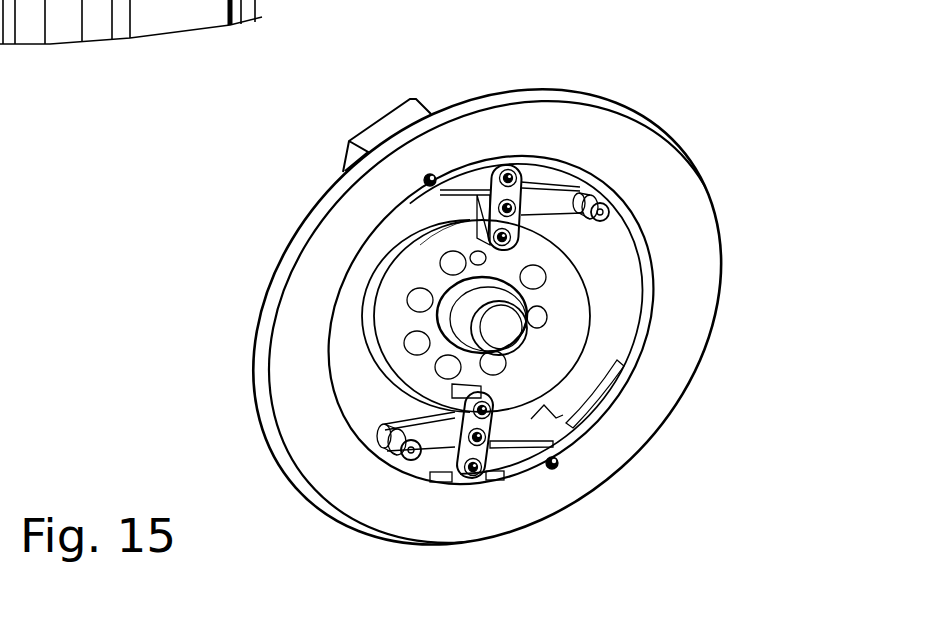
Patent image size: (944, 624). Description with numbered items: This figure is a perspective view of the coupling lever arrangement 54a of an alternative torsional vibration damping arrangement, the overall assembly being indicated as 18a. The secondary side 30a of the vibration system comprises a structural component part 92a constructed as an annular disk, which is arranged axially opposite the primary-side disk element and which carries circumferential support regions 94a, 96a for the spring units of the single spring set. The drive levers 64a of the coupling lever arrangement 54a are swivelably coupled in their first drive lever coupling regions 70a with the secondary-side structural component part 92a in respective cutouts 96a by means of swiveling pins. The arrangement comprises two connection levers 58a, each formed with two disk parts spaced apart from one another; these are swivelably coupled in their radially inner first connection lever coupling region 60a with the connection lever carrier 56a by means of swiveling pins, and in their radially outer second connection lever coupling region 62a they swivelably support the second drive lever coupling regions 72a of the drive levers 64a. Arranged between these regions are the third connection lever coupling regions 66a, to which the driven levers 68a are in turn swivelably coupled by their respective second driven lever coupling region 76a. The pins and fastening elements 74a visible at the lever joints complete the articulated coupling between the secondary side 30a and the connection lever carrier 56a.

The brake assembly 18a is at (487, 140).
The secondary side 30a is at (587, 93).
The coupling lever arrangement 54a is at (515, 138).
The connection lever carrier 56a is at (553, 297).
The connection lever 58a is at (462, 197).
The first connection lever coupling region 60a is at (430, 393).
The second connection lever coupling region 62a is at (500, 483).
The drive lever 64a is at (486, 178).
The third connection lever coupling region 66a is at (427, 490).
The driven lever 68a is at (558, 197).
The first drive lever coupling region 70a is at (555, 444).
The second drive lever coupling region 72a is at (468, 488).
The adjuster knob 74a is at (614, 223).
The second driven lever coupling region 76a is at (418, 247).
The structural component part 92a is at (648, 165).
The circumferential support region 94a is at (410, 127).
The circumferential support region / cutout 96a is at (577, 417).